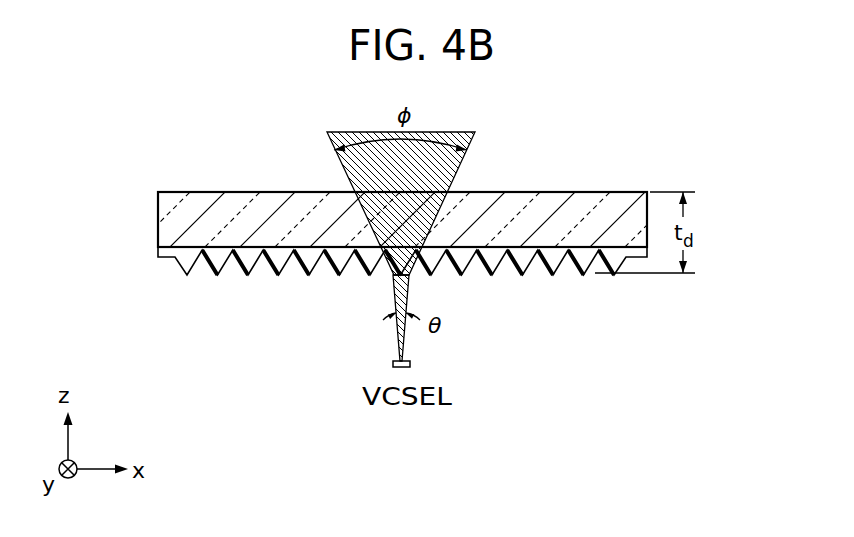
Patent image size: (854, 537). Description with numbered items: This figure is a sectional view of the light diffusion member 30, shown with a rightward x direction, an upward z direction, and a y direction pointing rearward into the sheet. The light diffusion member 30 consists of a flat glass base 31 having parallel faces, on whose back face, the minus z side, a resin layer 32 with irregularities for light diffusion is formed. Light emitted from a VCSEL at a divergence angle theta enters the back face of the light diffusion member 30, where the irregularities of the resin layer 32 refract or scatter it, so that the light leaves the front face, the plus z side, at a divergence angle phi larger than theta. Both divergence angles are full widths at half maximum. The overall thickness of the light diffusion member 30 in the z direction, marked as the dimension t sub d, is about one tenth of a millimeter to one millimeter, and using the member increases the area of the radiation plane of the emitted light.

The light diffusion member 30 is at (375, 196).
The glass base 31 is at (158, 207).
The resin layer 32 is at (158, 251).